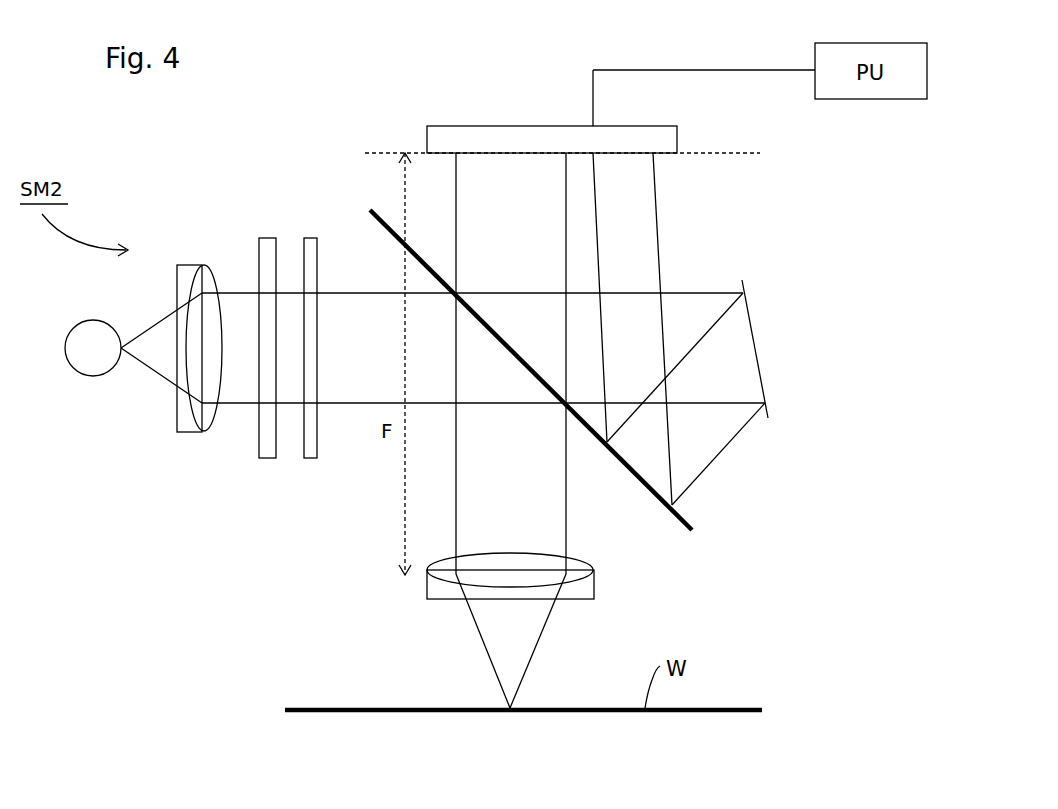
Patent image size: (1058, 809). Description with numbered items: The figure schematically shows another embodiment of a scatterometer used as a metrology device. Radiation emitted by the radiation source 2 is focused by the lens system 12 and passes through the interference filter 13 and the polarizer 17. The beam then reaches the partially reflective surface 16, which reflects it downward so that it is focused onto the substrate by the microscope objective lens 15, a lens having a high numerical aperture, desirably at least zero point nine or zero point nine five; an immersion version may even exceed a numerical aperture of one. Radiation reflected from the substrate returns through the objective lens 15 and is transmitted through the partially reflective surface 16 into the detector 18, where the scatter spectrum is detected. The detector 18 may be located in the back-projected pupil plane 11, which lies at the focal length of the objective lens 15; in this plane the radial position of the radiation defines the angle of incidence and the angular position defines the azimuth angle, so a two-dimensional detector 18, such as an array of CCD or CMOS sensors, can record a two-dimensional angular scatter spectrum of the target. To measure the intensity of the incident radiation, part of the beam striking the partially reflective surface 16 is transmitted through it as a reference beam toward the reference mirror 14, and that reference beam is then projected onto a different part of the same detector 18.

The radiation source 2 is at (100, 360).
The back-projected pupil plane 11 is at (745, 153).
The lens system 12 is at (190, 265).
The interference filter 13 is at (270, 238).
The reference mirror 14 is at (742, 282).
The microscope objective lens 15 is at (427, 588).
The partially reflective surface 16 is at (675, 522).
The polarizer 17 is at (310, 238).
The detector 18 is at (463, 126).